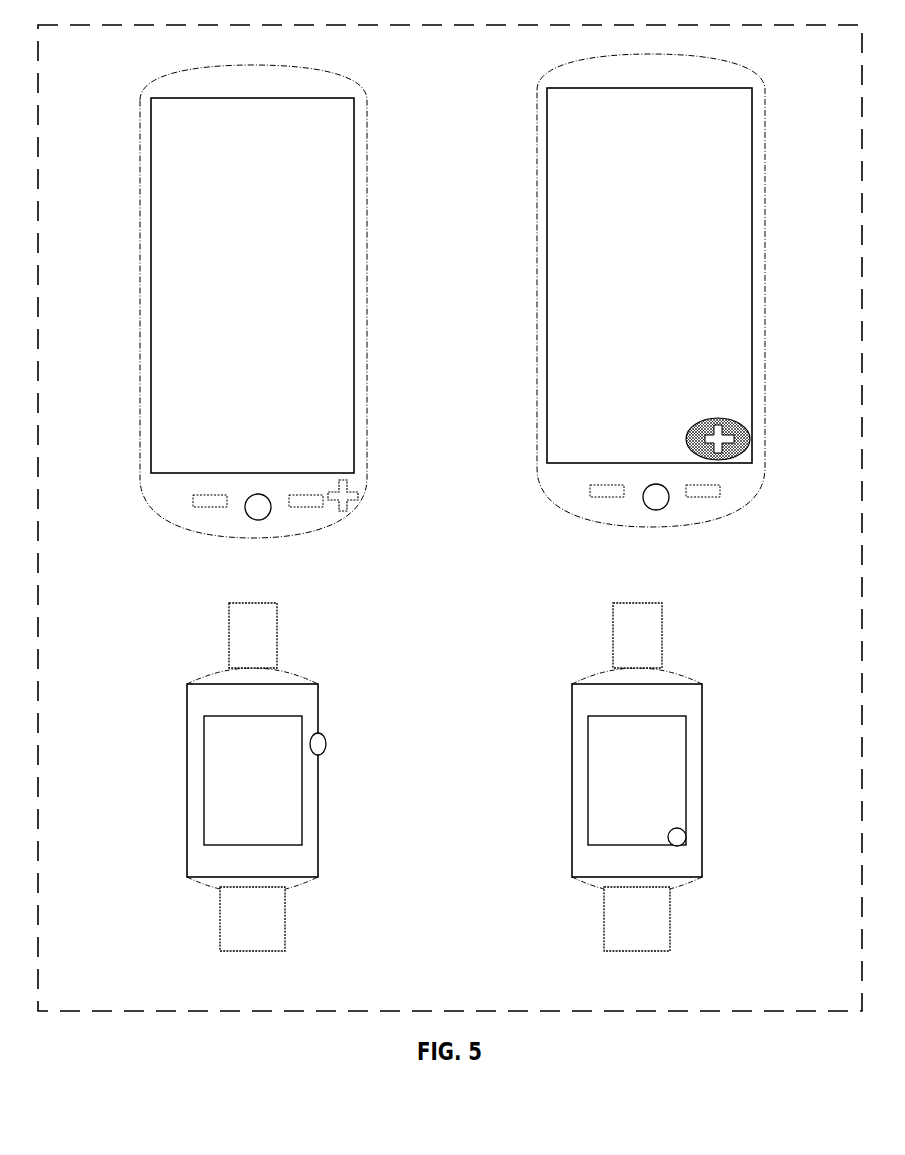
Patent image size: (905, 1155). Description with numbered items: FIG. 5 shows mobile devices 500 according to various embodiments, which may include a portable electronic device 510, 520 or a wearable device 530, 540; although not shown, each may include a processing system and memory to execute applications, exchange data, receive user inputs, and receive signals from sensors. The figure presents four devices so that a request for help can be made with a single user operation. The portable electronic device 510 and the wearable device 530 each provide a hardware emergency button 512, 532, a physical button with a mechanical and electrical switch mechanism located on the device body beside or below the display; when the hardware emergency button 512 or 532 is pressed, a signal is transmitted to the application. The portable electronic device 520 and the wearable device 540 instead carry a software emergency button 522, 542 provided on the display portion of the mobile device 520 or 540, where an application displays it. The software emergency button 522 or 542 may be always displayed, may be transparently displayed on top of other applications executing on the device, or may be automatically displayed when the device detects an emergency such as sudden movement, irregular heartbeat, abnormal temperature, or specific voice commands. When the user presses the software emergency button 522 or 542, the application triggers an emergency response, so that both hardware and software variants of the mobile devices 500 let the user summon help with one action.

The mobile devices 500 is at (450, 518).
The portable electronic device 510 is at (102, 153).
The hardware emergency button 512 is at (350, 482).
The portable electronic device 520 is at (515, 153).
The software emergency button 522 is at (730, 418).
The wearable device 530 is at (176, 646).
The hardware emergency button 532 is at (323, 732).
The wearable device 540 is at (548, 646).
The software emergency button 542 is at (684, 830).